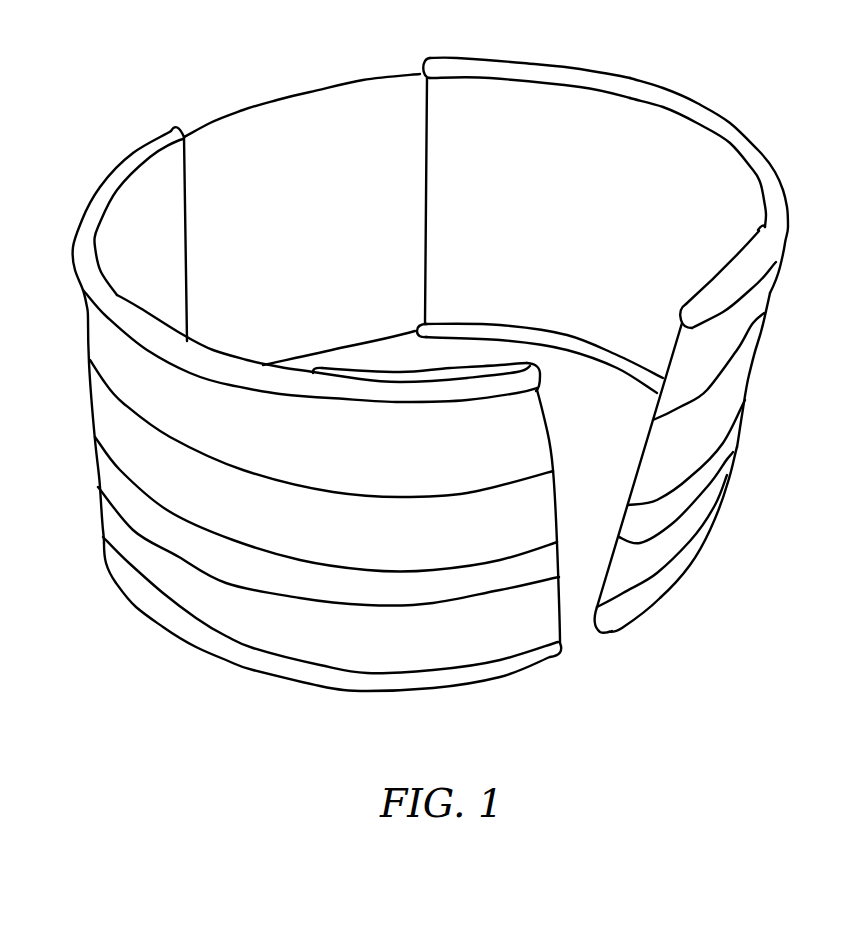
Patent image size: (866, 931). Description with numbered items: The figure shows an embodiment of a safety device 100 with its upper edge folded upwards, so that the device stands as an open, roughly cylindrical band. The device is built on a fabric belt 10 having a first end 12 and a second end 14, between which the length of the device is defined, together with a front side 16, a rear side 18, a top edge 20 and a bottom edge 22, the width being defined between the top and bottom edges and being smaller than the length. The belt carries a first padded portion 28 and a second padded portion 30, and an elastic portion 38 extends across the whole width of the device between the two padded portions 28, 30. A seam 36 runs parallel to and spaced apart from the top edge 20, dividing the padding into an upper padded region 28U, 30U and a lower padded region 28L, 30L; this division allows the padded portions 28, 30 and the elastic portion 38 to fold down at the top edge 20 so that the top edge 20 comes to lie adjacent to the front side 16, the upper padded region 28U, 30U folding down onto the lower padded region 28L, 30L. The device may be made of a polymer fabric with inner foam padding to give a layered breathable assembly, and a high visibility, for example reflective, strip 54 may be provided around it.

The safety device 100 is at (120, 104).
The fabric belt 10 is at (130, 537).
The first end 12 is at (330, 372).
The second end 14 is at (768, 232).
The front side 16 is at (738, 396).
The rear side 18 is at (484, 100).
The top edge 20 is at (777, 173).
The bottom edge 22 is at (724, 498).
The first padded portion 28 is at (320, 533).
The upper padded region 28U is at (97, 336).
The lower padded region 28L is at (103, 421).
The second padded portion 30 is at (755, 319).
The upper padded region 30U is at (764, 290).
The lower padded region 30L is at (748, 360).
The seam 36 is at (110, 396).
The elastic portion 38 is at (361, 92).
The high visibility strip 54 is at (118, 485).